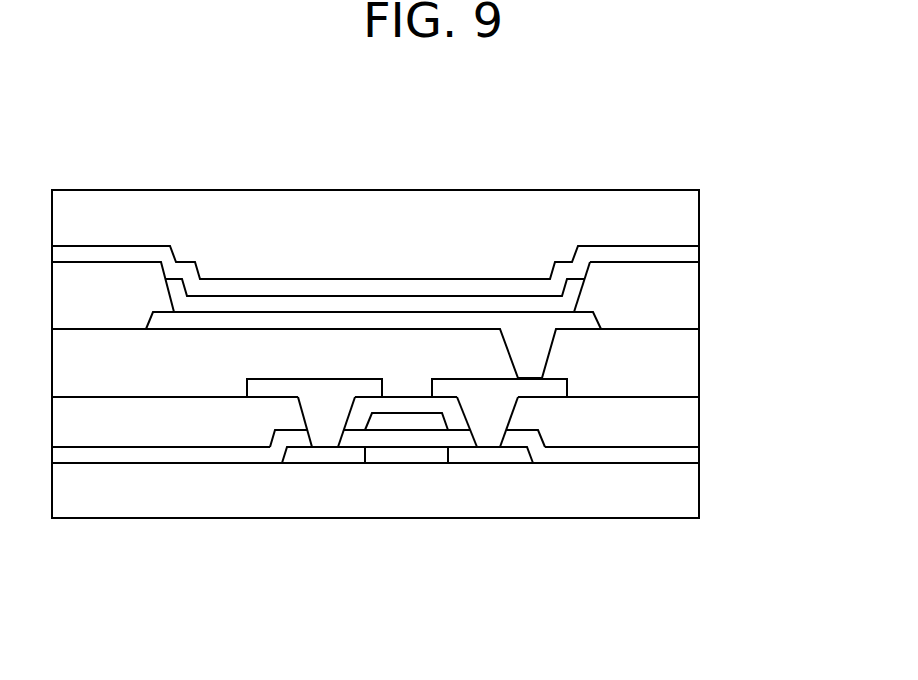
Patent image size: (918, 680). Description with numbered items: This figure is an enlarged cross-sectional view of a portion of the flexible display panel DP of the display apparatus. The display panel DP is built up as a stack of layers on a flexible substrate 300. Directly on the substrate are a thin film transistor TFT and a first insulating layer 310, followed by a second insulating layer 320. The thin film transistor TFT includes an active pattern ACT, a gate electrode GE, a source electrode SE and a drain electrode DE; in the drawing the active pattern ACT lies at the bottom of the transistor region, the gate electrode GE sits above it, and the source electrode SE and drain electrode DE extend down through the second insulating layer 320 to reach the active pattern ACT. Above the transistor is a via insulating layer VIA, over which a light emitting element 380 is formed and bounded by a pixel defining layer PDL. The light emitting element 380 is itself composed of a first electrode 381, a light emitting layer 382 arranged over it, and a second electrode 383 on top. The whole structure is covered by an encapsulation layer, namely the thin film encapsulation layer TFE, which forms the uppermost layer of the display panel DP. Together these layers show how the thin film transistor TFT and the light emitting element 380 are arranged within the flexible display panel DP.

The display panel DP is at (786, 195).
The flexible substrate 300 is at (693, 493).
The first insulating layer 310 is at (693, 458).
The second insulating layer 320 is at (693, 422).
The via insulating layer VIA is at (693, 364).
The pixel defining layer PDL is at (693, 296).
The thin film encapsulation layer TFE is at (693, 214).
The light emitting element 380 is at (408, 122).
The first electrode 381 is at (285, 318).
The light emitting layer 382 is at (337, 302).
The second electrode 383 is at (387, 287).
The thin film transistor TFT is at (502, 588).
The active pattern ACT is at (385, 457).
The gate electrode GE is at (418, 423).
The source electrode SE is at (328, 398).
The drain electrode DE is at (492, 398).